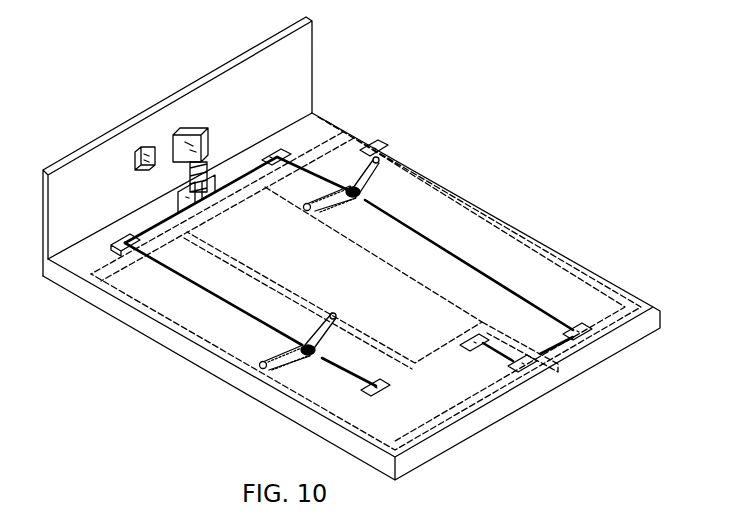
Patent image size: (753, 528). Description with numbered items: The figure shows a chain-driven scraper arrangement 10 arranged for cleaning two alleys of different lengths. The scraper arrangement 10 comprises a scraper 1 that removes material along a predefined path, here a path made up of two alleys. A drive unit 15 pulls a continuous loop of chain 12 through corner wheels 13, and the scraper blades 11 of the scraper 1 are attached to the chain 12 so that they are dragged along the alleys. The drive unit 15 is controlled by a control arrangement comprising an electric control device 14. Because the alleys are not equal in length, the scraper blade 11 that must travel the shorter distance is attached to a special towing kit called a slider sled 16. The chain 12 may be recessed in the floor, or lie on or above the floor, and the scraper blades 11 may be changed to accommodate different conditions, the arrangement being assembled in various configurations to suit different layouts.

The scraper arrangement 10 is at (378, 123).
The scraper 1 is at (303, 352).
The scraper blade 11 is at (258, 368).
The chain 12 is at (407, 228).
The corner wheel 13 is at (113, 247).
The electric control device 14 is at (141, 148).
The drive unit 15 is at (193, 128).
The slider sled 16 is at (338, 347).